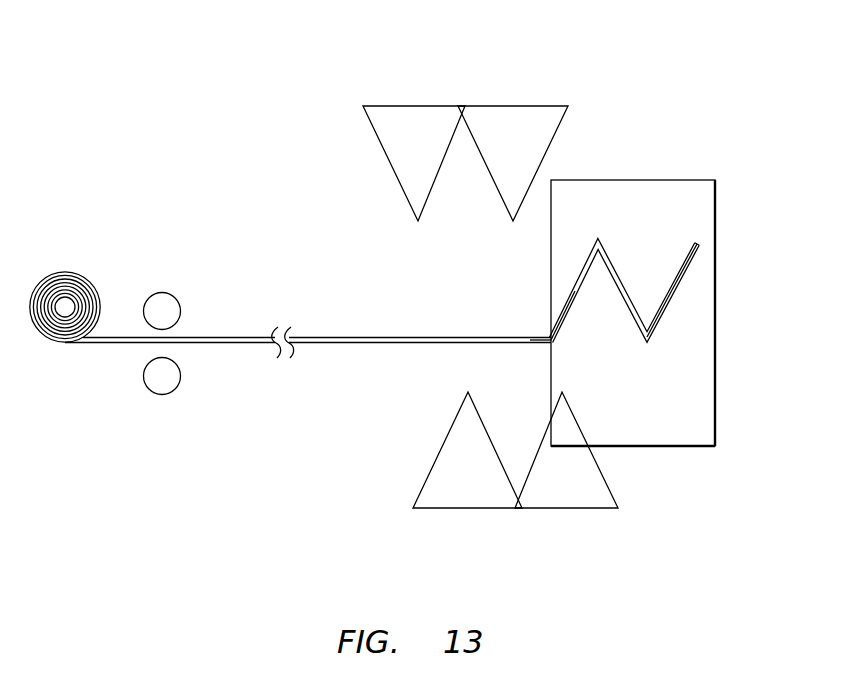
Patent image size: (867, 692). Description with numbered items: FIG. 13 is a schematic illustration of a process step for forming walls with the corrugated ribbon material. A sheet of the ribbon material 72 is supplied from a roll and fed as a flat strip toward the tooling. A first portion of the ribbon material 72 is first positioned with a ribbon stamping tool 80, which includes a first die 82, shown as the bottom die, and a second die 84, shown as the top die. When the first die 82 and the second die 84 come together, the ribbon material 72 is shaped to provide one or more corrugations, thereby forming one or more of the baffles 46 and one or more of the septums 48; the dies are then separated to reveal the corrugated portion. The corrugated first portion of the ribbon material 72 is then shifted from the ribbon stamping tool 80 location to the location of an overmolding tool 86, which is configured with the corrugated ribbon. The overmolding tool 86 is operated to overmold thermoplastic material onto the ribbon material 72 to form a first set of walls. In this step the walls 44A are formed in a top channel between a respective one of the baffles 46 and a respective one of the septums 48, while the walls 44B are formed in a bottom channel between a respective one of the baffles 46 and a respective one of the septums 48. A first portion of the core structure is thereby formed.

The ribbon material 72 is at (103, 352).
The ribbon stamping tool 80 is at (484, 90).
The second die 84 is at (397, 105).
The first die 82 is at (455, 510).
The overmolding tool 86 is at (602, 180).
The septum 48 is at (617, 268).
The wall 44A is at (672, 248).
The wall 44B is at (577, 332).
The baffle 46 is at (578, 280).